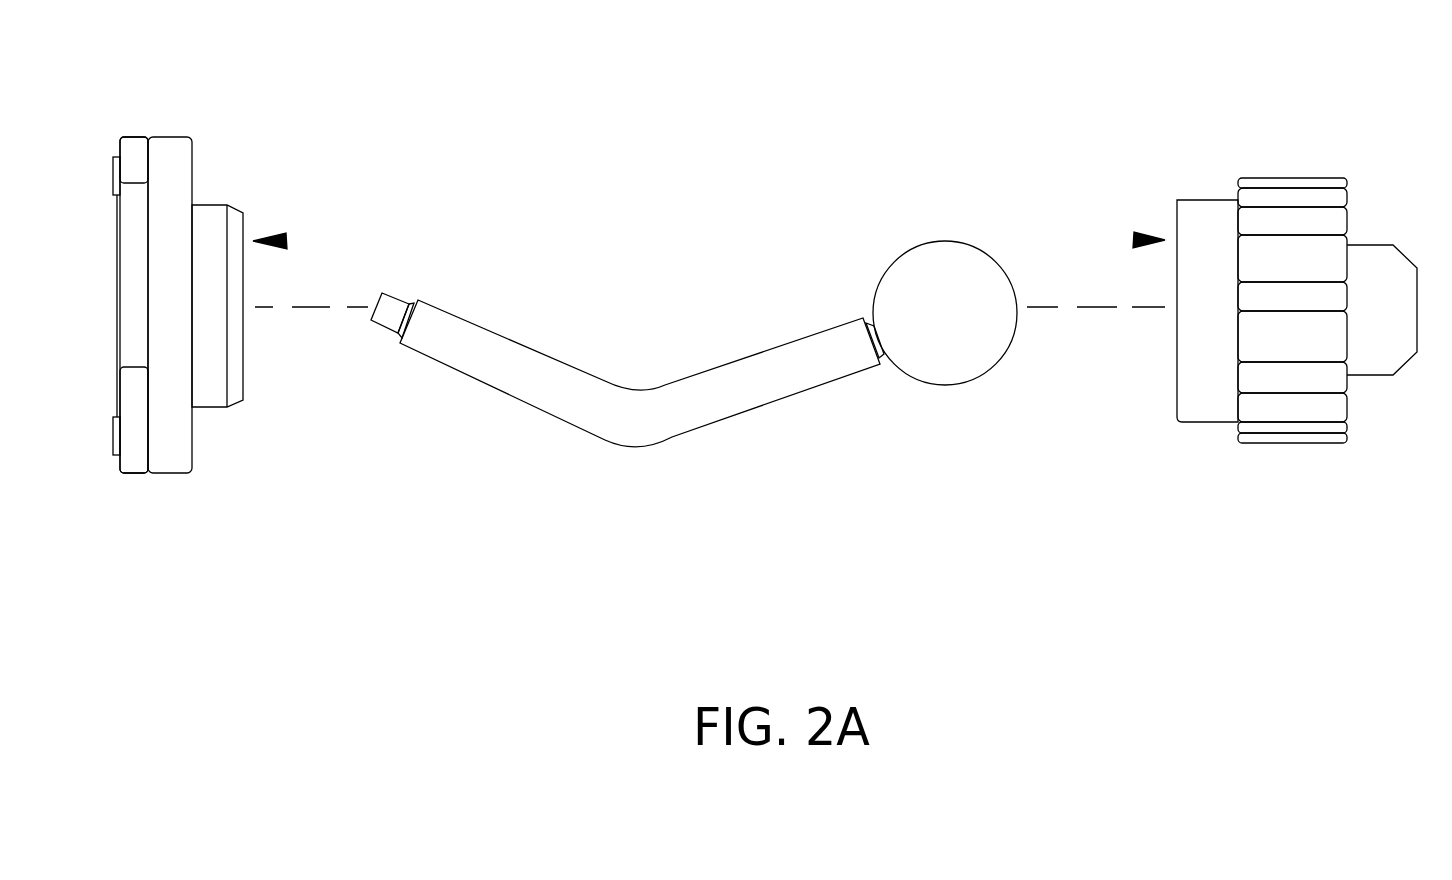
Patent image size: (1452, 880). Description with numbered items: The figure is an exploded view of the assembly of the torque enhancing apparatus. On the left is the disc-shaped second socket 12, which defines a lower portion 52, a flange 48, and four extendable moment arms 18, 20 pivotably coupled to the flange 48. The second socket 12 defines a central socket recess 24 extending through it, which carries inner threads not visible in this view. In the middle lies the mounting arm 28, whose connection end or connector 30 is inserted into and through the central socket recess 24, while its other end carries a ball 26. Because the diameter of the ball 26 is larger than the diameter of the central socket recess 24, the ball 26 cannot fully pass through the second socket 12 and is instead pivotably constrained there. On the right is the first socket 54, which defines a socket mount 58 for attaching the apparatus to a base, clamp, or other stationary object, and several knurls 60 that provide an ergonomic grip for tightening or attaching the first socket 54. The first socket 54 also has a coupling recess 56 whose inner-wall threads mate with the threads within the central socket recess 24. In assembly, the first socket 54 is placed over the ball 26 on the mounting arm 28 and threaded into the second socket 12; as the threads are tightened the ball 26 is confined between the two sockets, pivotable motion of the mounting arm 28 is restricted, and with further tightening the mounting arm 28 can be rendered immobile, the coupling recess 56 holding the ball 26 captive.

The second socket 12 is at (177, 427).
The extendable moment arm 18 is at (132, 223).
The extendable moment arm 20 is at (137, 460).
The central socket recess 24 is at (288, 241).
The ball 26 is at (938, 353).
The mounting arm 28 is at (663, 432).
The connector 30 is at (388, 310).
The flange 48 is at (192, 158).
The lower portion of the second socket 52 is at (215, 205).
The first socket 54 is at (1195, 407).
The coupling recess 56 is at (1134, 240).
The socket mount 58 is at (1378, 355).
The knurls 60 is at (1327, 222).